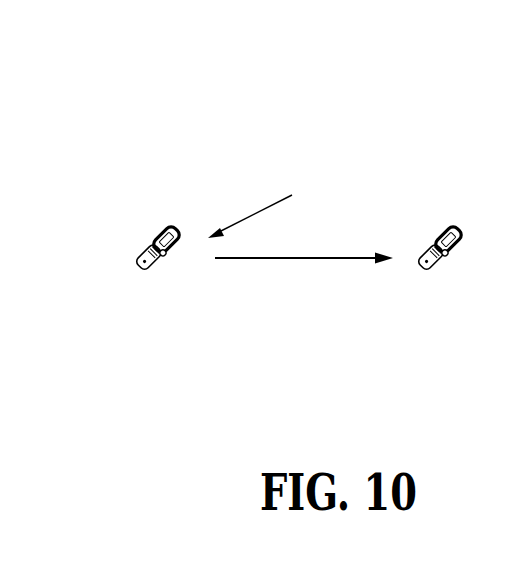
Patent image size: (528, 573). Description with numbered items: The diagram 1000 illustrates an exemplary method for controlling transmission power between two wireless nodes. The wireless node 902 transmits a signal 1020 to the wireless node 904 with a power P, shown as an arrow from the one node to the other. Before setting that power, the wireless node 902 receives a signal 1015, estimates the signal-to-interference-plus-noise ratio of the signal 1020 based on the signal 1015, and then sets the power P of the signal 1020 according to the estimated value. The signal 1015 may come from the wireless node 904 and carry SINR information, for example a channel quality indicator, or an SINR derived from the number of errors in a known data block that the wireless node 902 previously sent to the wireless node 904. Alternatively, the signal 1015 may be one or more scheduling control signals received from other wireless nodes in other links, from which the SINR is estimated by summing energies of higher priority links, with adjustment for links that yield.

The diagram 1000 is at (130, 66).
The wireless node 902 is at (145, 268).
The wireless node 904 is at (427, 268).
The signal 1015 is at (275, 200).
The signal 1020 is at (304, 277).